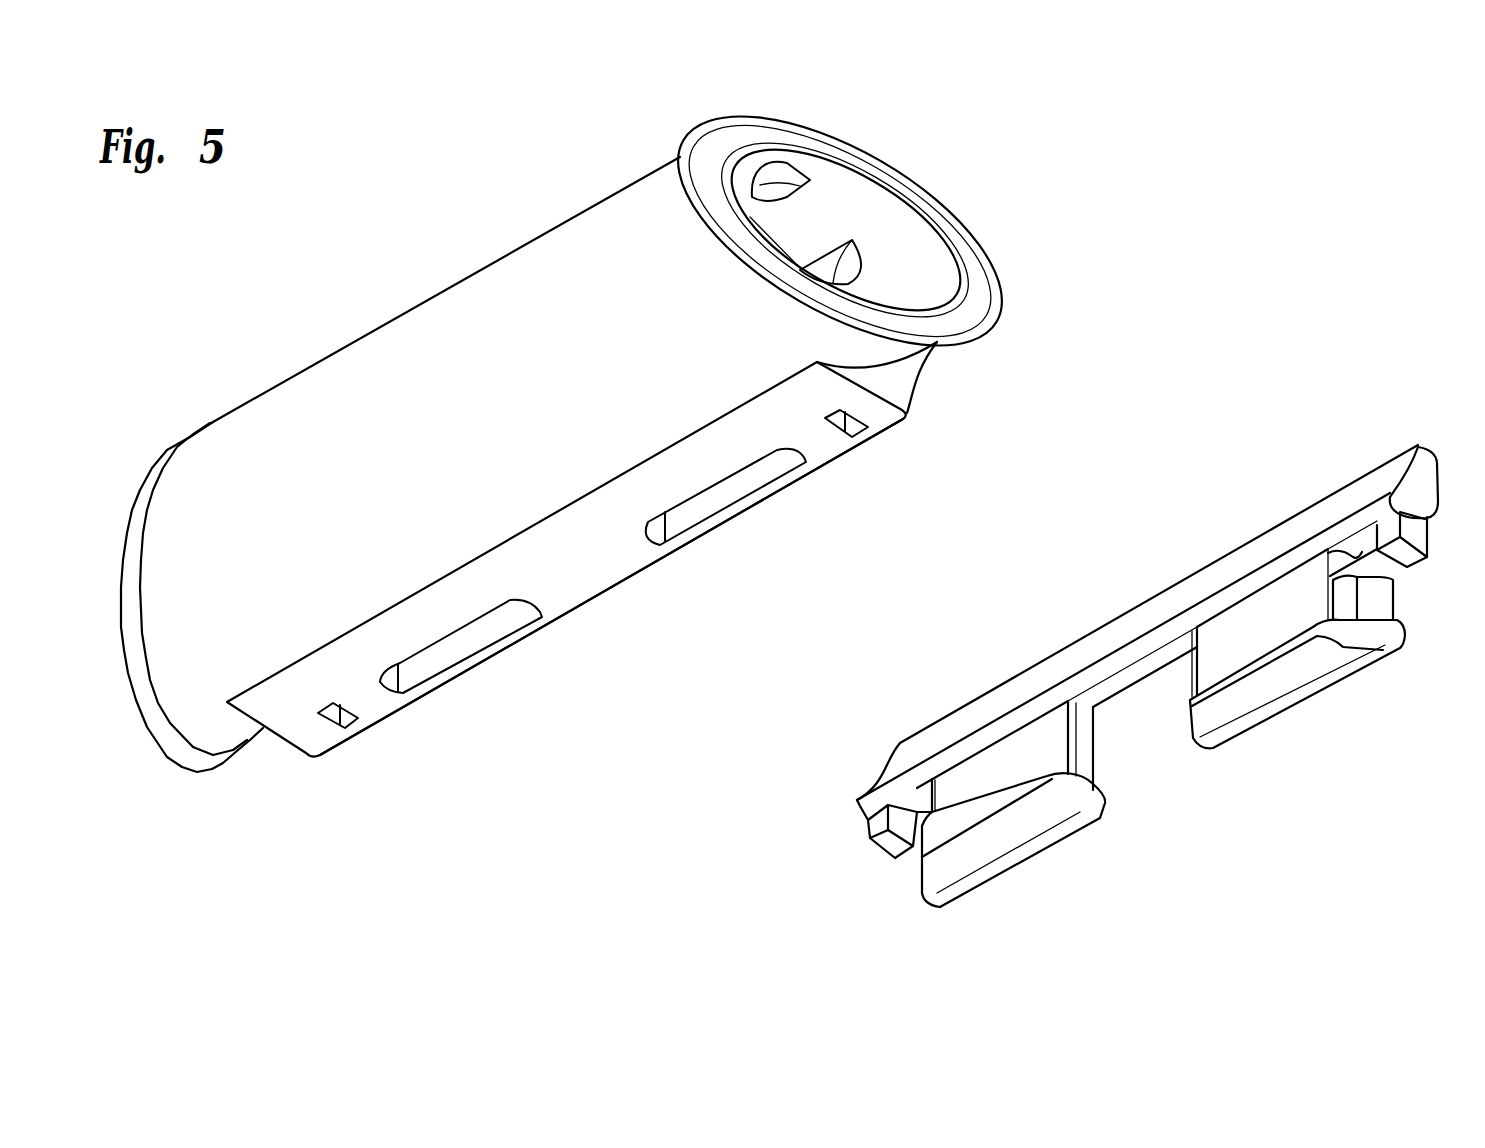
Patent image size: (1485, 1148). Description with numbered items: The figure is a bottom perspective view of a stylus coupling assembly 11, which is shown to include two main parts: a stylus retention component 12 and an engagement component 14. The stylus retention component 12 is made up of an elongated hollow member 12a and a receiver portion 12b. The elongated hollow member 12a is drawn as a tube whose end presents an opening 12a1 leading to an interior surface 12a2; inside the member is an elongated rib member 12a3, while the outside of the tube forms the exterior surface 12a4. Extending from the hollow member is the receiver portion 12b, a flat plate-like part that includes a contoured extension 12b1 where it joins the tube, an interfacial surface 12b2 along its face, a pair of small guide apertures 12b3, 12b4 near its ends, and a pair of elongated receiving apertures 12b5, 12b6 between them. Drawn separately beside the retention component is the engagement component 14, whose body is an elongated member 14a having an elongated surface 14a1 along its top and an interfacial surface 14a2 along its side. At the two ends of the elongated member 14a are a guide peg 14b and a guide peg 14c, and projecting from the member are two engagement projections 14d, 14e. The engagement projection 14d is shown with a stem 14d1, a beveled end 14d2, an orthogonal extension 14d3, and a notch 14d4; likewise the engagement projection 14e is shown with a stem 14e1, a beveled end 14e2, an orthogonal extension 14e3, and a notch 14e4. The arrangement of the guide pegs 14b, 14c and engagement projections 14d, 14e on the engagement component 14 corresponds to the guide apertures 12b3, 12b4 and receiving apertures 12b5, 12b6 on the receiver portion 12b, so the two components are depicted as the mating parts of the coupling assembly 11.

The stylus coupling assembly 11 is at (1328, 106).
The stylus retention component 12 is at (1023, 92).
The elongated hollow member 12a is at (446, 184).
The opening 12a1 is at (898, 196).
The interior surface 12a2 is at (907, 237).
The elongated rib member 12a3 is at (773, 180).
The exterior surface 12a4 is at (484, 357).
The receiver portion 12b is at (603, 647).
The contoured extension 12b1 is at (900, 385).
The interfacial surface 12b2 is at (603, 547).
The guide aperture 12b3 is at (840, 428).
The guide aperture 12b4 is at (332, 718).
The receiving aperture 12b5 is at (727, 493).
The receiving aperture 12b6 is at (460, 650).
The engagement component 14 is at (1313, 390).
The elongated member 14a is at (1124, 561).
The elongated surface 14a1 is at (1280, 535).
The interfacial surface 14a2 is at (1145, 670).
The guide peg 14b is at (1437, 587).
The guide peg 14c is at (877, 881).
The engagement projection 14d is at (1347, 727).
The stem 14d1 is at (1243, 620).
The beveled end 14d2 is at (1343, 667).
The orthogonal extension 14d3 is at (1245, 677).
The notch 14d4 is at (1347, 565).
The engagement projection 14e is at (1053, 882).
The stem 14e1 is at (990, 763).
The beveled end 14e2 is at (1060, 828).
The orthogonal extension 14e3 is at (975, 852).
The notch 14e4 is at (913, 793).